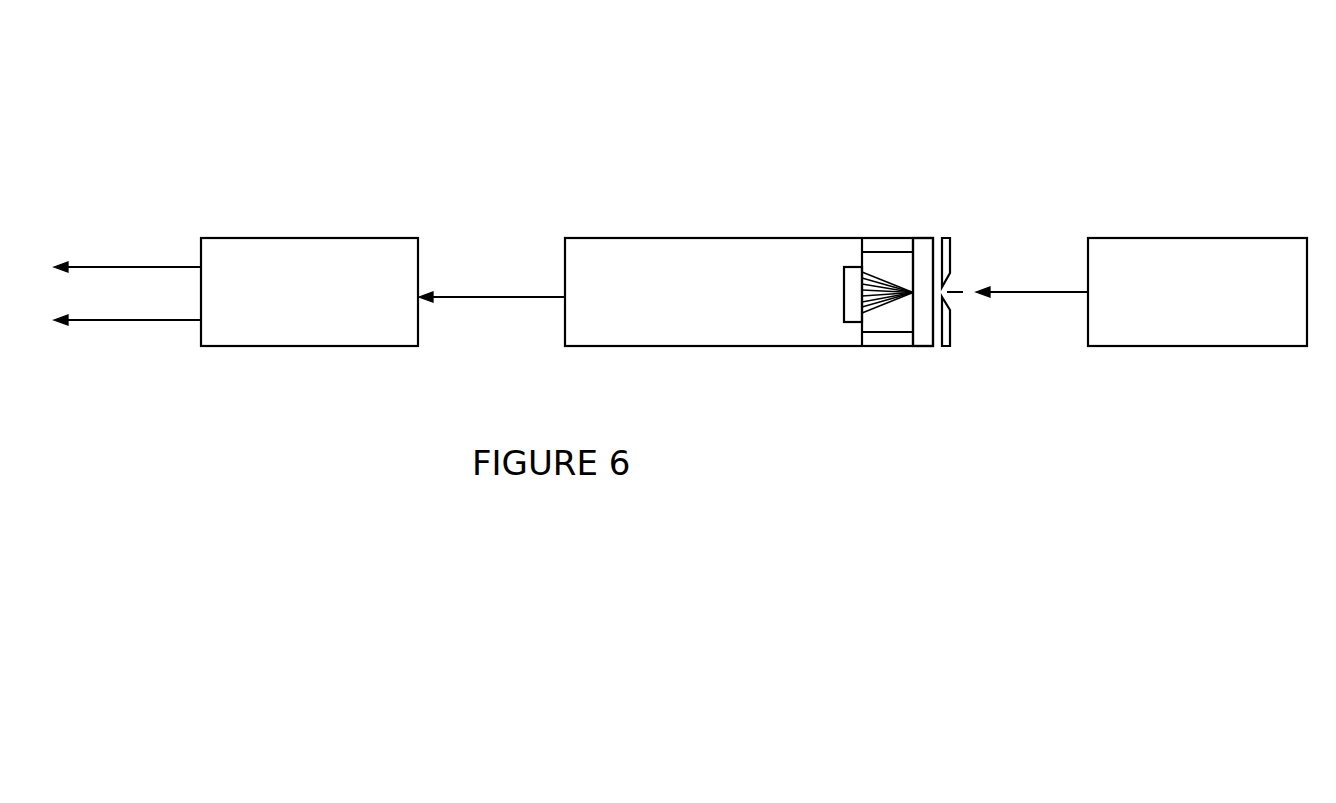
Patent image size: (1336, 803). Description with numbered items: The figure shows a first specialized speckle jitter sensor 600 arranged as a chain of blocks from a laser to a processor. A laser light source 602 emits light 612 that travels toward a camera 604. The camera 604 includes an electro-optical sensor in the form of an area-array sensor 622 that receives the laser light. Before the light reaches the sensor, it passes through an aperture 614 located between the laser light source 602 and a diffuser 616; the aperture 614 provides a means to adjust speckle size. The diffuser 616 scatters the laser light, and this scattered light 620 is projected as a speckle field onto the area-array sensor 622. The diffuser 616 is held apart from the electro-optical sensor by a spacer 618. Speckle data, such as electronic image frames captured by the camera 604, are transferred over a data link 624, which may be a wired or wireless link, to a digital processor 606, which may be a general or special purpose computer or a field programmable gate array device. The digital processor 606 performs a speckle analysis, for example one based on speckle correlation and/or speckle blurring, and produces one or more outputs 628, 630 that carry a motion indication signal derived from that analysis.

The specialized speckle jitter sensor 600 is at (1031, 80).
The laser light source 602 is at (1259, 336).
The camera 604 is at (573, 336).
The digital processor 606 is at (216, 336).
The light 612 is at (995, 293).
The aperture 614 is at (952, 265).
The diffuser 616 is at (923, 342).
The spacer 618 is at (882, 340).
The scattered light 620 is at (872, 272).
The area-array sensor 622 is at (850, 277).
The data link 624 is at (450, 298).
The motion indication signal output 628 is at (90, 265).
The motion indication signal output 630 is at (90, 322).